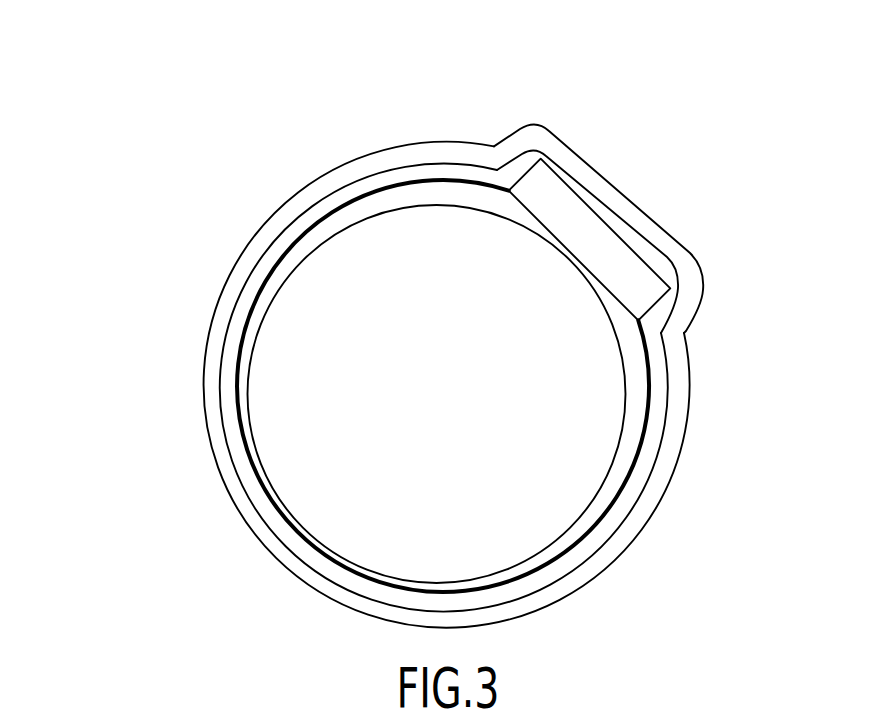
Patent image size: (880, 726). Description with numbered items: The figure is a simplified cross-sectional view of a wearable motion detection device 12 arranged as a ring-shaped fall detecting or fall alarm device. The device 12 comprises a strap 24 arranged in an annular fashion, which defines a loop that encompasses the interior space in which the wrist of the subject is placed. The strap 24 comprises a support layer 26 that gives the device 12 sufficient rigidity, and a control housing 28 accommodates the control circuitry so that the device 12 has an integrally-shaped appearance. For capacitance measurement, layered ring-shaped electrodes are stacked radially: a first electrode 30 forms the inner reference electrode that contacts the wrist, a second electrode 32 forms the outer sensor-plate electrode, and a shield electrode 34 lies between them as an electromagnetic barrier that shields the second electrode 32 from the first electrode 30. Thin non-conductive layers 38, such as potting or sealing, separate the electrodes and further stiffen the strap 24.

The wearable motion detection device 12 is at (598, 147).
The strap 24 is at (205, 422).
The support layer 26 is at (297, 240).
The control housing 28 is at (608, 257).
The first electrode 30 is at (480, 578).
The second electrode 32 is at (620, 190).
The shield electrode 34 is at (312, 573).
The non-conductive layers 38 is at (433, 193).